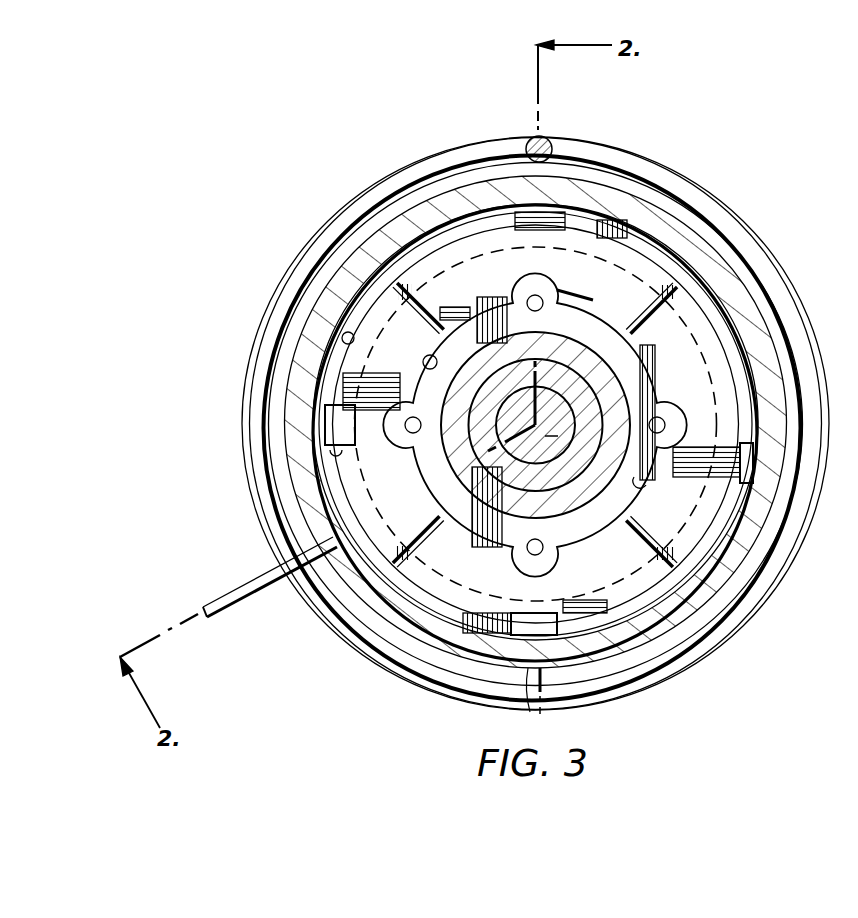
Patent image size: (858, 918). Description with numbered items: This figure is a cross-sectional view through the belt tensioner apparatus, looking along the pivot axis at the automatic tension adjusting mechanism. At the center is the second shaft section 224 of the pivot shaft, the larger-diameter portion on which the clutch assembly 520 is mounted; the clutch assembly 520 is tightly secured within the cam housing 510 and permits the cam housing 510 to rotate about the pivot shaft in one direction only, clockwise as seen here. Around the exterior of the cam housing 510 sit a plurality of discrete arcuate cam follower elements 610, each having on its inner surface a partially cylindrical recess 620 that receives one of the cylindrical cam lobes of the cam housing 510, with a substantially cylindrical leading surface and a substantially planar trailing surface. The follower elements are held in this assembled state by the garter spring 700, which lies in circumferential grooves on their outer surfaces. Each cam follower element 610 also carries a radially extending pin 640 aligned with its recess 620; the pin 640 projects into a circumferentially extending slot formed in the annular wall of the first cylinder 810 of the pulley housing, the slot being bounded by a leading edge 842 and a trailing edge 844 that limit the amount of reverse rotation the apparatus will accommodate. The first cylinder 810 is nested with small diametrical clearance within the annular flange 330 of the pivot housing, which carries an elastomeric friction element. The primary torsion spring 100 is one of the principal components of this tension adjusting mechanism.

The primary torsion spring 100 is at (452, 146).
The first cylinder 810 is at (338, 304).
The annular flange 330 is at (303, 382).
The cam follower element 610 is at (478, 302).
The recess 620 is at (564, 280).
The pin 640 is at (537, 236).
The cam housing 510 is at (634, 386).
The trailing edge 844 is at (350, 342).
The leading edge 842 is at (338, 447).
The garter spring 700 is at (660, 538).
The clutch assembly 520 is at (464, 470).
The second shaft section 224 is at (572, 464).